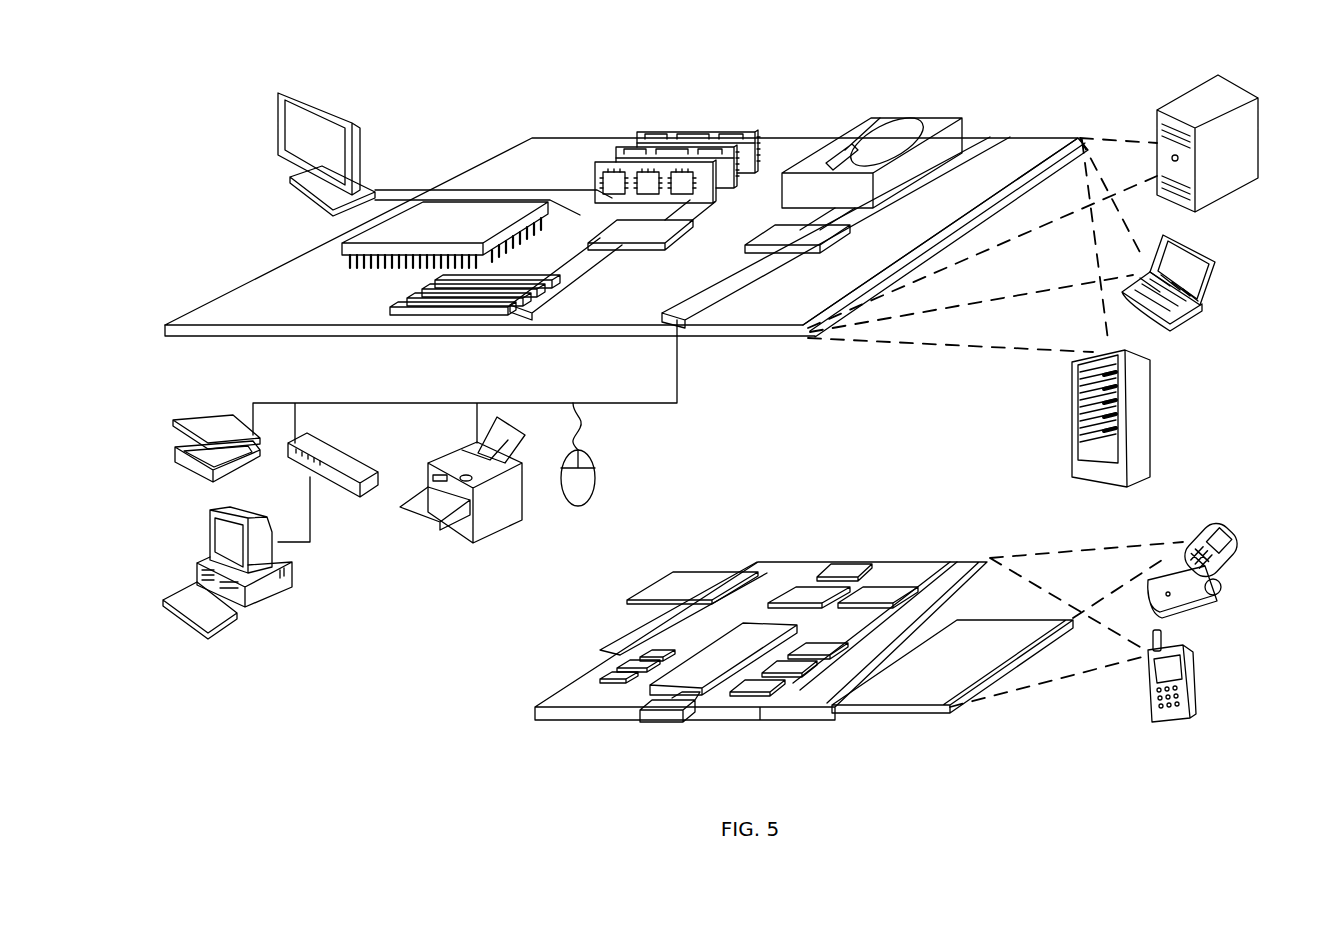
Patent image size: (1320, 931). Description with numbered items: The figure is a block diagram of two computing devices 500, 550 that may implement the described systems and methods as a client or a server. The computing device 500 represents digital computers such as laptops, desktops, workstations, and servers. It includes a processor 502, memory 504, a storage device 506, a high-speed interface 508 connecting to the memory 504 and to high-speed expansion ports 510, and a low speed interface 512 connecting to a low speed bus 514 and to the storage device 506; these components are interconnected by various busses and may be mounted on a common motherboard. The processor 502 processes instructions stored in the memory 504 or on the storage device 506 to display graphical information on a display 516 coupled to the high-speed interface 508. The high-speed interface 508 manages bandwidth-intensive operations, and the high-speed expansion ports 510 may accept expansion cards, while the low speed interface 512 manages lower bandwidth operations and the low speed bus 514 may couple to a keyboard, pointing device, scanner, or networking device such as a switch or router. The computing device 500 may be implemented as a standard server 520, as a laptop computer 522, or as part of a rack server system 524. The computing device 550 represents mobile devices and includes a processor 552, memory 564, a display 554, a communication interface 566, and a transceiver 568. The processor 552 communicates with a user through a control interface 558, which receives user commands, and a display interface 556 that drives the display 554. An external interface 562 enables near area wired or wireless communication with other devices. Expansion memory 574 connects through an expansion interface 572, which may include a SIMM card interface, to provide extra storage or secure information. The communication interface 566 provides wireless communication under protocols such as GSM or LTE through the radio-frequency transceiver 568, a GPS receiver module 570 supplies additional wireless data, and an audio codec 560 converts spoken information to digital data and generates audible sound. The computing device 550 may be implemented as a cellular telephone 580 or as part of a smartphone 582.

The computing device 500 is at (460, 110).
The processor 502 is at (345, 247).
The memory 504 is at (650, 140).
The storage device 506 is at (860, 122).
The high-speed interface 508 is at (600, 222).
The high-speed expansion ports 510 is at (400, 305).
The low speed interface 512 is at (778, 232).
The low speed bus 514 is at (683, 322).
The display 516 is at (284, 92).
The standard server 520 is at (1157, 124).
The laptop computer 522 is at (1217, 258).
The rack server system 524 is at (1072, 440).
The computing device 550 is at (500, 725).
The processor 552 is at (697, 688).
The display 554 is at (915, 692).
The display interface 556 is at (760, 690).
The control interface 558 is at (790, 668).
The audio codec 560 is at (815, 650).
The external interface 562 is at (665, 710).
The memory 564 is at (615, 668).
The communication interface 566 is at (808, 595).
The transceiver 568 is at (880, 595).
The GPS receiver module 570 is at (850, 565).
The expansion interface 572 is at (750, 568).
The expansion memory 574 is at (673, 572).
The cellular telephone 580 is at (1196, 520).
The smartphone 582 is at (1150, 692).